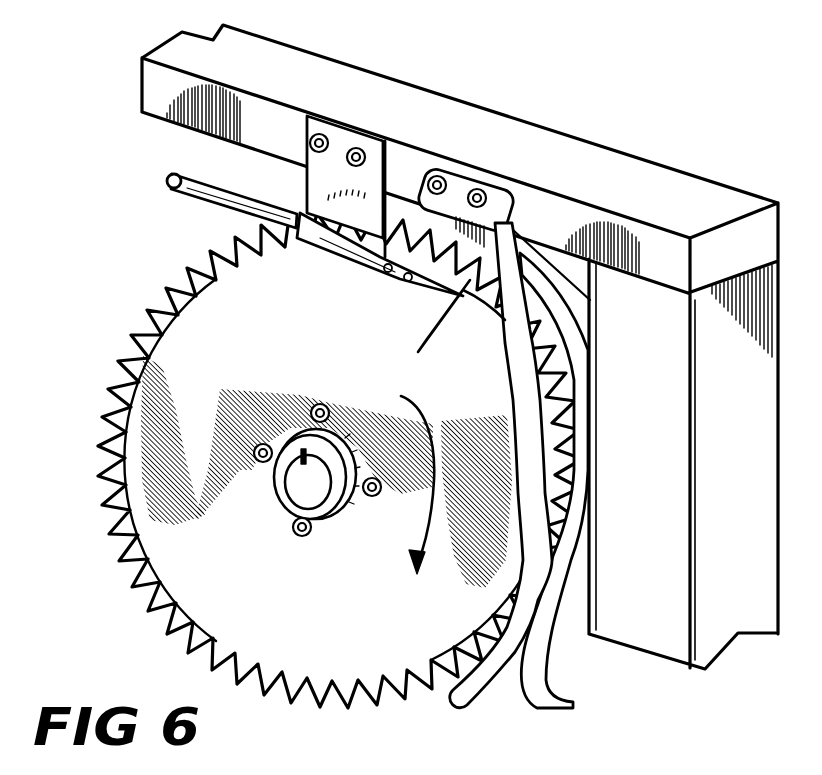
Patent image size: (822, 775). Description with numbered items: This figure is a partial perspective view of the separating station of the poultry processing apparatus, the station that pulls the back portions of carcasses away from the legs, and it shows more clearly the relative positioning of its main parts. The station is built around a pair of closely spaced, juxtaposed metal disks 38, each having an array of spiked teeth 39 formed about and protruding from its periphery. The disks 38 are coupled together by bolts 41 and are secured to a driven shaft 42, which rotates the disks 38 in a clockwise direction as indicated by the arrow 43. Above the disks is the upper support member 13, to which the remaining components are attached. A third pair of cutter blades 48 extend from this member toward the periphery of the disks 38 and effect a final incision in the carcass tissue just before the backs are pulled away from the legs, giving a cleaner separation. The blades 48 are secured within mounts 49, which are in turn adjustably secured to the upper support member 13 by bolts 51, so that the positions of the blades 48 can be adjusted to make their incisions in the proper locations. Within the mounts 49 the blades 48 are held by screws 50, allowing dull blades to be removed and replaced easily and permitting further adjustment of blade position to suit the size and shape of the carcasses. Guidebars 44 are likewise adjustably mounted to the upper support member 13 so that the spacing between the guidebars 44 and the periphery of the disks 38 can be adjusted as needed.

The upper support member 13 is at (178, 52).
The metal disks 38 is at (365, 618).
The spiked teeth 39 is at (147, 616).
The bolts 41 is at (372, 510).
The driven shaft 42 is at (303, 488).
The arrow 43 is at (421, 412).
The guidebars 44 is at (548, 704).
The cutter blades 48 is at (453, 330).
The mounts 49 is at (374, 180).
The screws 50 is at (397, 271).
The bolts 51 is at (356, 140).